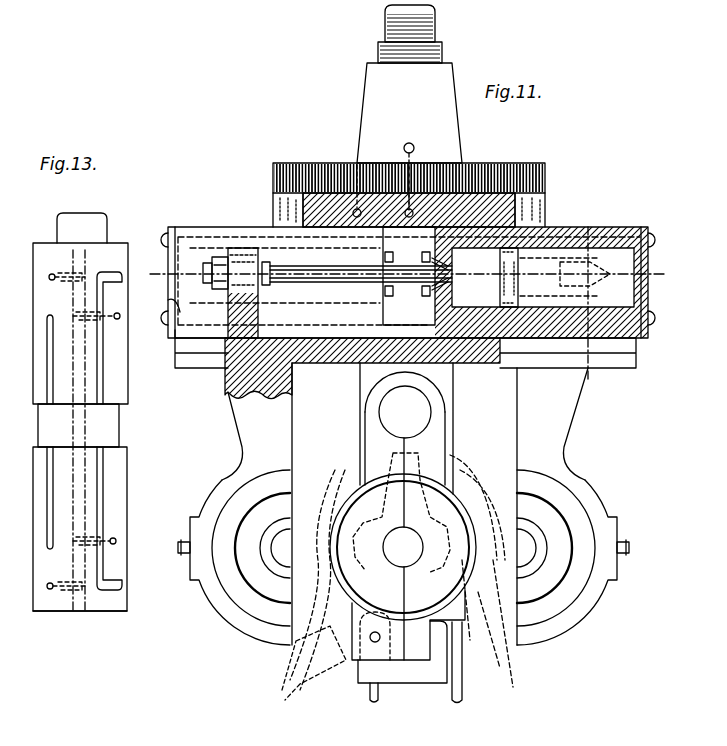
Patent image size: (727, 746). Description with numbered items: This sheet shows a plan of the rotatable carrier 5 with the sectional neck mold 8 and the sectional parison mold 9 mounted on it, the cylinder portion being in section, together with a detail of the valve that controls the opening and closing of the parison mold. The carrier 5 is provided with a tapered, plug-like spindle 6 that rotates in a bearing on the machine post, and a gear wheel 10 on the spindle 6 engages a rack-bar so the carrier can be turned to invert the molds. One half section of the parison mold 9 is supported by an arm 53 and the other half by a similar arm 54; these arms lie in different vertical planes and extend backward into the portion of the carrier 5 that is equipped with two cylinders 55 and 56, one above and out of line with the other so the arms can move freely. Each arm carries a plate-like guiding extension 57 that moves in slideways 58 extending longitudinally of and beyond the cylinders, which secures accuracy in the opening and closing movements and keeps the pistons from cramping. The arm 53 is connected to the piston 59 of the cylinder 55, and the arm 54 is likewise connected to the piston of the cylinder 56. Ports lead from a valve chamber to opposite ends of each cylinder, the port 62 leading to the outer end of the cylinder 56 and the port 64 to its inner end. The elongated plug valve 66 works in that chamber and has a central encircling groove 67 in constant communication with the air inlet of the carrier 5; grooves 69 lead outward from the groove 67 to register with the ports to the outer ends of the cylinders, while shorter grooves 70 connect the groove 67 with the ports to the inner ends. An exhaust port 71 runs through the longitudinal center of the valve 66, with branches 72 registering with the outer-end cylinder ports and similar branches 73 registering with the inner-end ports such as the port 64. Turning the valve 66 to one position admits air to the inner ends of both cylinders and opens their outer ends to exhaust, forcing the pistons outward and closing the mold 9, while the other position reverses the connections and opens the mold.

In FIG. 11, the carrier 5 is at (528, 215).
In FIG. 11, the spindle 6 is at (409, 107).
In FIG. 11, the sectional neck mold 8 is at (397, 570).
In FIG. 11, the sectional parison mold 9 is at (165, 261).
In FIG. 11, the gear wheel 10 is at (546, 180).
In FIG. 11, the arm 53 is at (262, 318).
In FIG. 11, the arm 54 is at (580, 398).
In FIG. 11, the cylinder 55 is at (605, 230).
In FIG. 11, the cylinder 56 is at (180, 316).
In FIG. 11, the guiding extension 57 is at (348, 350).
In FIG. 11, the slideways 58 is at (622, 346).
In FIG. 11, the piston 59 is at (512, 308).
In FIG. 11, the port 62 is at (302, 212).
In FIG. 11, the port 64 is at (356, 208).
In FIG. 13, the plug valve 66 is at (33, 350).
In FIG. 13, the central encircling groove 67 is at (120, 434).
In FIG. 13, the grooves 69 is at (100, 388).
In FIG. 13, the grooves 70 is at (48, 458).
In FIG. 13, the exhaust port 71 is at (76, 604).
In FIG. 13, the branches 72 is at (49, 277).
In FIG. 13, the branches 73 is at (120, 316).